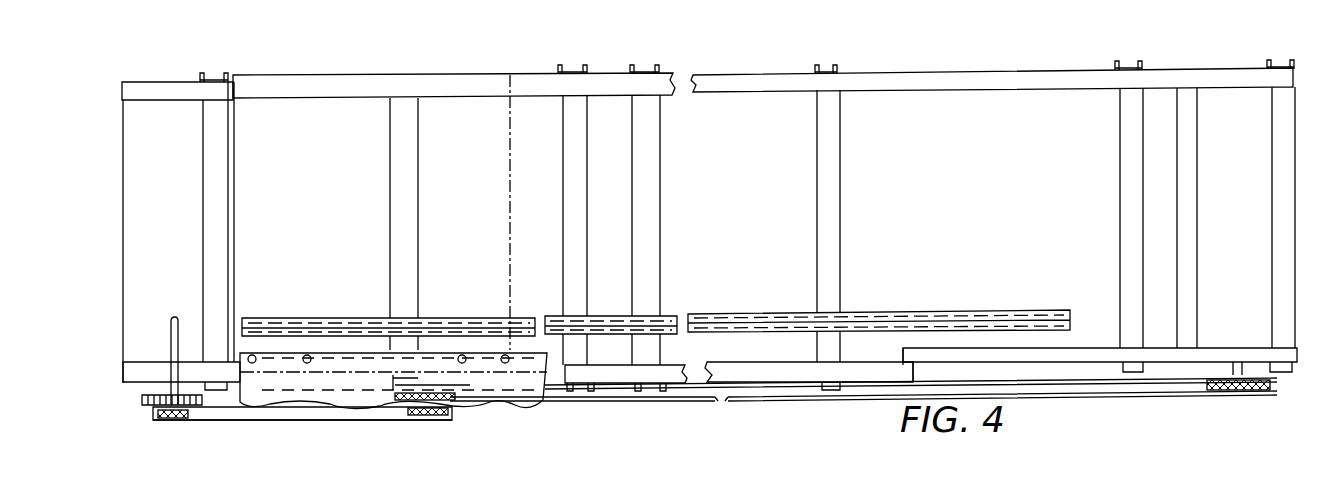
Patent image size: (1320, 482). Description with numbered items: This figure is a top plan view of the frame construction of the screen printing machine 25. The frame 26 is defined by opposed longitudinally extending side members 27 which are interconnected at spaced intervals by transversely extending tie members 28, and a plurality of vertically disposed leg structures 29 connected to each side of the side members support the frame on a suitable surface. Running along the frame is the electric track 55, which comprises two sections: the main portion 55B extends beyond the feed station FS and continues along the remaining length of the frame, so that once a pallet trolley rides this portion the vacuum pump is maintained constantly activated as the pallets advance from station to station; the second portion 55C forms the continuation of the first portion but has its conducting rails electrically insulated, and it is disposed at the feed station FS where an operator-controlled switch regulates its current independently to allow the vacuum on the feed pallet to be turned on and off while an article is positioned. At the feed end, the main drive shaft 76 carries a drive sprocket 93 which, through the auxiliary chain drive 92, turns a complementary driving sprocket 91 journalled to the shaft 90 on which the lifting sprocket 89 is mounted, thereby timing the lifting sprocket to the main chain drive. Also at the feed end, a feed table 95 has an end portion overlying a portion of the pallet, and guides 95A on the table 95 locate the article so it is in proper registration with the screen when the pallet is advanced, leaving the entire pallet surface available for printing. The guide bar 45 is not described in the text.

The screen printing machine 25 is at (348, 430).
The frame 26 is at (931, 73).
The side member 27 is at (998, 91).
The tie member 28 is at (830, 212).
The leg structure 29 is at (566, 73).
The guide bar 45 is at (863, 430).
The electric track 55 is at (470, 311).
The main portion of electric track 55B is at (662, 314).
The second portion of electric track 55C is at (310, 322).
The feed station FS is at (444, 307).
The main drive shaft 76 is at (407, 385).
The lifting sprocket 89 is at (150, 407).
The shaft 90 is at (143, 391).
The driving sprocket 91 is at (158, 415).
The auxiliary chain drive 92 is at (258, 420).
The drive sprocket 93 is at (420, 415).
The feed table 95 is at (306, 390).
The guides 95A is at (255, 340).